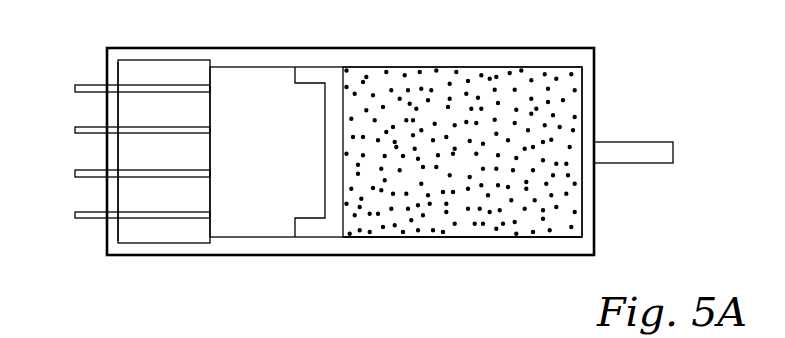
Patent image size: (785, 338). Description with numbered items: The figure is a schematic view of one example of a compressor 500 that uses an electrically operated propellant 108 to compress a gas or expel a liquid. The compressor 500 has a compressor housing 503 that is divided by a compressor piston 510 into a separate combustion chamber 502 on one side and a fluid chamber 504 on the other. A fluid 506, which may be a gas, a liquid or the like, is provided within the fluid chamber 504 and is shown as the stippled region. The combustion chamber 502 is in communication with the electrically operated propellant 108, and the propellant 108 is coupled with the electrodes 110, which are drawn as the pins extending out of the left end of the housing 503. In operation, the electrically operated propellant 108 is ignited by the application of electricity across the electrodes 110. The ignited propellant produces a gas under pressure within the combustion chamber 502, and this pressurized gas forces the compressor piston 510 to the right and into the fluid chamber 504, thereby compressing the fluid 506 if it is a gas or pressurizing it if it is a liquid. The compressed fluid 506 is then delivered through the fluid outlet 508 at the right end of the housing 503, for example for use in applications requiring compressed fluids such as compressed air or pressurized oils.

The compressor 500 is at (297, 47).
The combustion chamber 502 is at (236, 67).
The compressor housing 503 is at (152, 47).
The fluid chamber 504 is at (421, 67).
The fluid 506 is at (495, 220).
The fluid outlet 508 is at (640, 142).
The compressor piston 510 is at (335, 160).
The electrically operated propellant 108 is at (117, 157).
The electrodes 110 is at (75, 127).